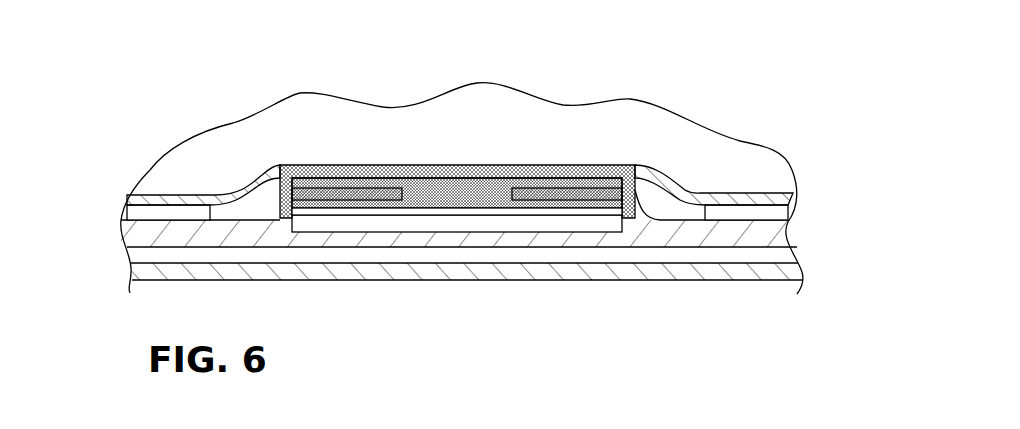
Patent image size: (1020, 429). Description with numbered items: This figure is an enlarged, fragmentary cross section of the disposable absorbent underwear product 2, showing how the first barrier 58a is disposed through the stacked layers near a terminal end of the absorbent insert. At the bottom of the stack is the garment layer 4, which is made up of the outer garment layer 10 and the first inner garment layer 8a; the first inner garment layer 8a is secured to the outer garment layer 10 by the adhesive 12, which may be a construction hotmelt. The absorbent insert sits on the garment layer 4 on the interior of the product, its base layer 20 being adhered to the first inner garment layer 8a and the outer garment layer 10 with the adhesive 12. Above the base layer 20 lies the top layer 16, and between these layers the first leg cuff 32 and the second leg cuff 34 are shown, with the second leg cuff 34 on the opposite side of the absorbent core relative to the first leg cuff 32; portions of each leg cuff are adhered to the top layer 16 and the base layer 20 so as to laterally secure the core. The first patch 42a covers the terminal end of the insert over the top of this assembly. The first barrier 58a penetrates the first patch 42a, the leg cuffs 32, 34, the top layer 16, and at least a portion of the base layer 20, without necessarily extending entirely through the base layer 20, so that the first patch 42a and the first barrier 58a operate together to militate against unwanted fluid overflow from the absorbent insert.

The disposable absorbent underwear product 2 is at (763, 130).
The garment layer 4 is at (280, 283).
The outer garment layer 10 is at (157, 271).
The adhesive 12 is at (126, 212).
The first inner garment layer 8a is at (563, 238).
The base layer 20 is at (445, 214).
The top layer 16 is at (498, 194).
The first leg cuff 32 is at (354, 190).
The second leg cuff 34 is at (593, 190).
The first barrier 58a is at (403, 165).
The first patch 42a is at (683, 187).